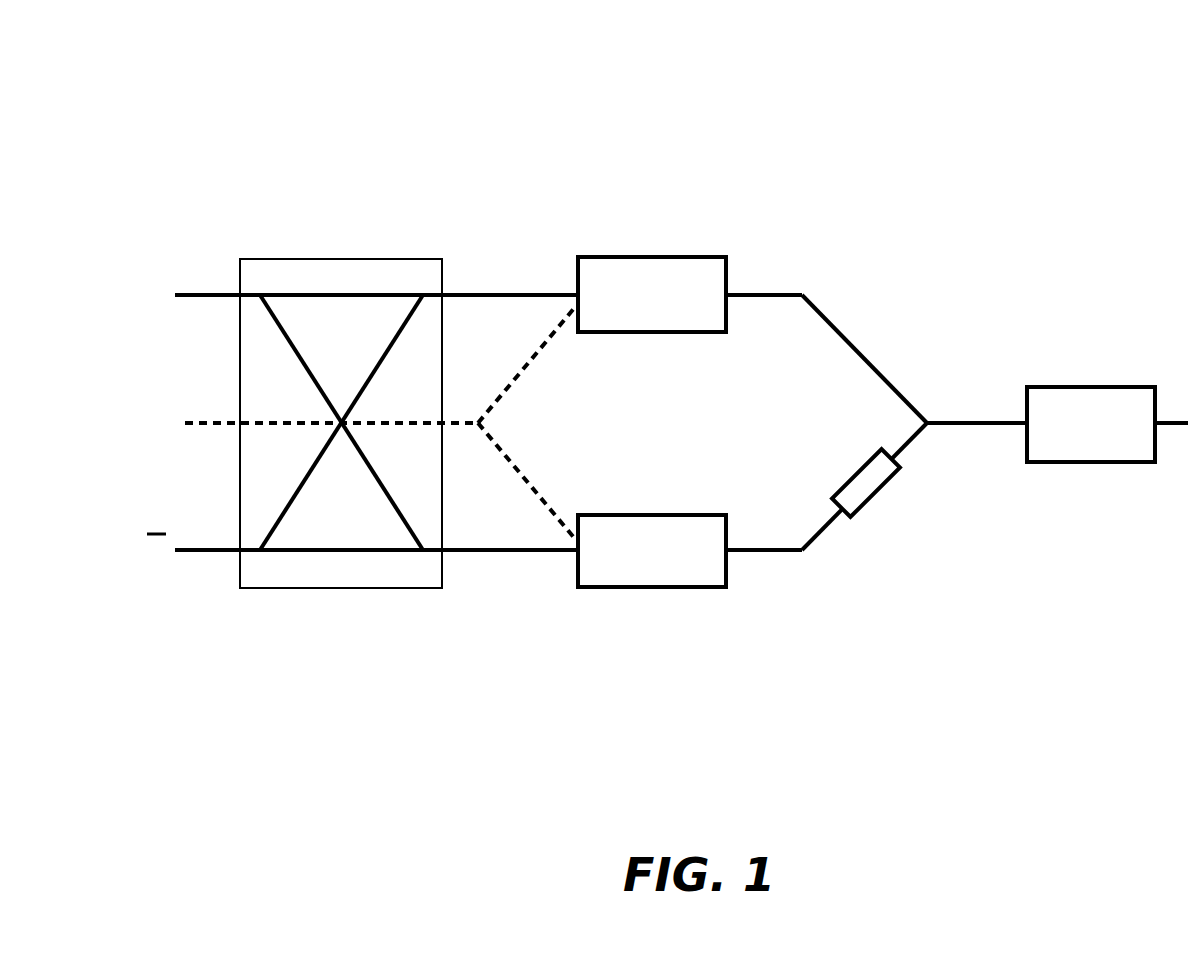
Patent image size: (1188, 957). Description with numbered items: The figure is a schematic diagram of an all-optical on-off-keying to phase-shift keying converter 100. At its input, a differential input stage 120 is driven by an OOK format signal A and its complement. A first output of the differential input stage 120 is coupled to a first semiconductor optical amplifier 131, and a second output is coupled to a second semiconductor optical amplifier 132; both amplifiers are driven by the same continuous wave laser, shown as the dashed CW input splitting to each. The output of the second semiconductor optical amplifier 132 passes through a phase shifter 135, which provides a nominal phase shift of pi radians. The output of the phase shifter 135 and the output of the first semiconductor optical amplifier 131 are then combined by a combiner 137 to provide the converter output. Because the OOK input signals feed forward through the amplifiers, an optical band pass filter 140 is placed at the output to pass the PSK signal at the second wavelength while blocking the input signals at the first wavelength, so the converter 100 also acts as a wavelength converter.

The all-optical OOK-to-PSK converter 100 is at (678, 44).
The differential input stage 120 is at (338, 588).
The first semiconductor optical amplifier 131 is at (650, 257).
The second semiconductor optical amplifier 132 is at (650, 587).
The phase shifter 135 is at (872, 497).
The combiner 137 is at (933, 413).
The optical band pass filter 140 is at (1090, 387).